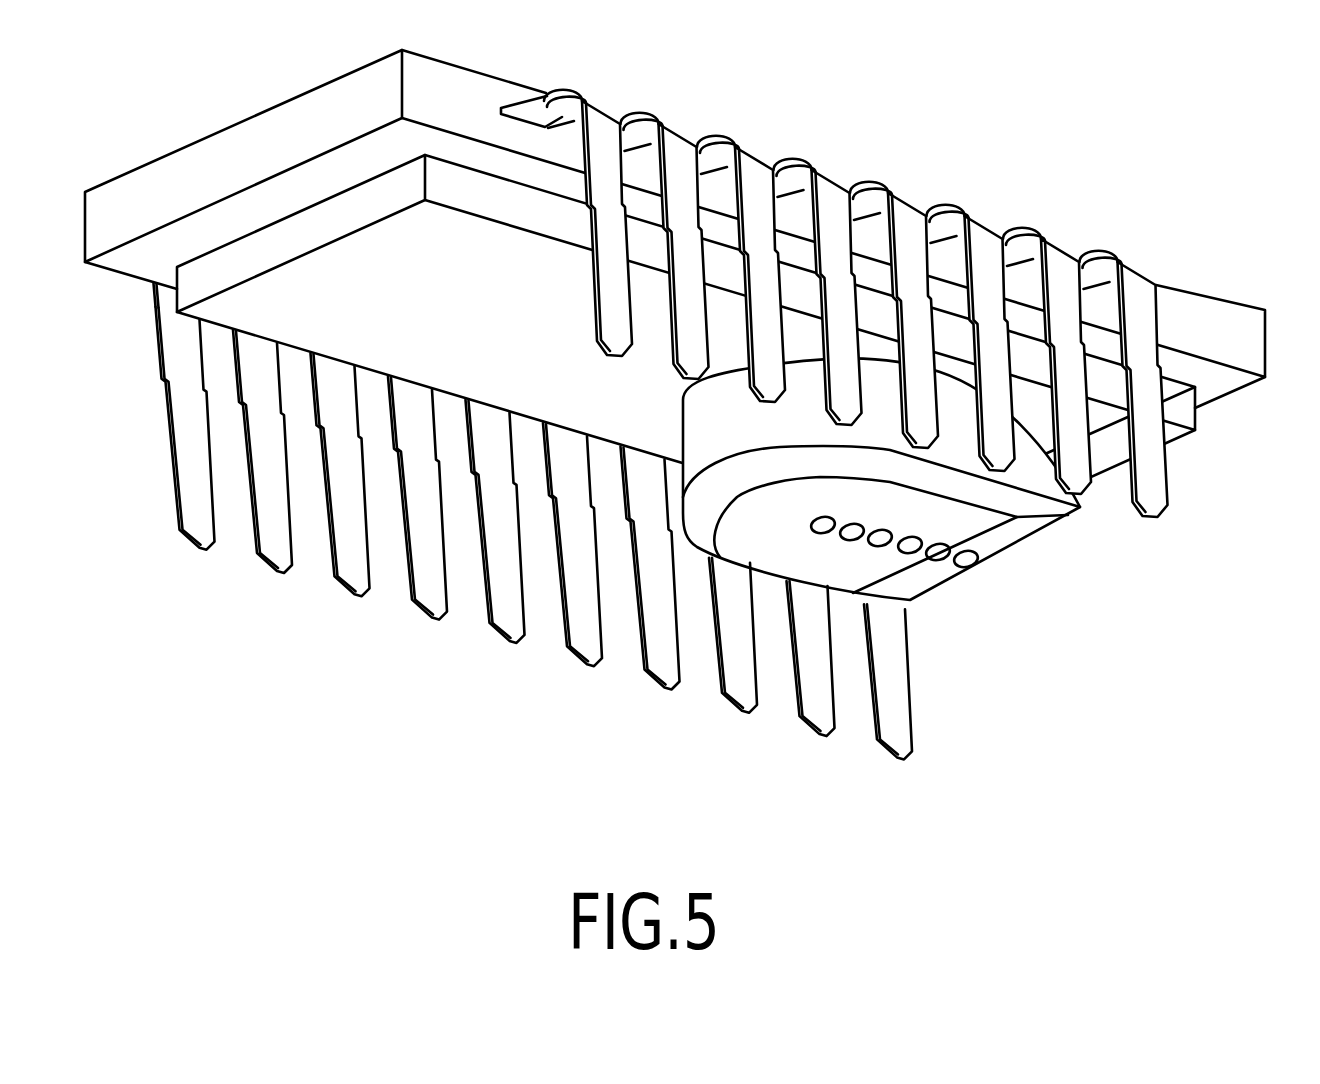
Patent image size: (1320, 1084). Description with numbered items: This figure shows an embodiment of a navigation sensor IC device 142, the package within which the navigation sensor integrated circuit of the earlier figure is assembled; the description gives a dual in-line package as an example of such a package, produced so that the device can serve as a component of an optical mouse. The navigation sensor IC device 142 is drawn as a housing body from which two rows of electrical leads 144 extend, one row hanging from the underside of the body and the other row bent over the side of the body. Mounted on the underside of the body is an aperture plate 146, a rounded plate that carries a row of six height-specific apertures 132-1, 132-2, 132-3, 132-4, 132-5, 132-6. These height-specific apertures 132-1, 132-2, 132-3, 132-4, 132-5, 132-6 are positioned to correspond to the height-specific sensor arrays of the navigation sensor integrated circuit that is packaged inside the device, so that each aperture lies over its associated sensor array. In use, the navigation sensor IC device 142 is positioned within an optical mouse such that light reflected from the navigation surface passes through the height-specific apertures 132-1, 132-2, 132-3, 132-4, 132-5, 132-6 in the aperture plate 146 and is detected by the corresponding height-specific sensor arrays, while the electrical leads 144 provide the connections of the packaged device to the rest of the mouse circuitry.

The navigation sensor IC device 142 is at (1190, 142).
The electrical leads 144 is at (1176, 468).
The aperture plate 146 is at (777, 552).
The height-specific aperture 132-1 is at (976, 563).
The height-specific aperture 132-2 is at (940, 561).
The height-specific aperture 132-3 is at (912, 554).
The height-specific aperture 132-4 is at (882, 547).
The height-specific aperture 132-5 is at (854, 541).
The height-specific aperture 132-6 is at (825, 534).